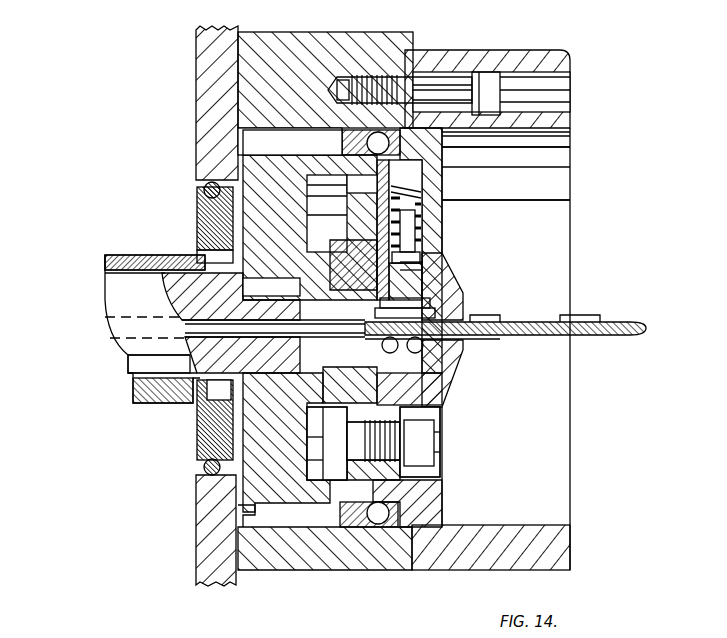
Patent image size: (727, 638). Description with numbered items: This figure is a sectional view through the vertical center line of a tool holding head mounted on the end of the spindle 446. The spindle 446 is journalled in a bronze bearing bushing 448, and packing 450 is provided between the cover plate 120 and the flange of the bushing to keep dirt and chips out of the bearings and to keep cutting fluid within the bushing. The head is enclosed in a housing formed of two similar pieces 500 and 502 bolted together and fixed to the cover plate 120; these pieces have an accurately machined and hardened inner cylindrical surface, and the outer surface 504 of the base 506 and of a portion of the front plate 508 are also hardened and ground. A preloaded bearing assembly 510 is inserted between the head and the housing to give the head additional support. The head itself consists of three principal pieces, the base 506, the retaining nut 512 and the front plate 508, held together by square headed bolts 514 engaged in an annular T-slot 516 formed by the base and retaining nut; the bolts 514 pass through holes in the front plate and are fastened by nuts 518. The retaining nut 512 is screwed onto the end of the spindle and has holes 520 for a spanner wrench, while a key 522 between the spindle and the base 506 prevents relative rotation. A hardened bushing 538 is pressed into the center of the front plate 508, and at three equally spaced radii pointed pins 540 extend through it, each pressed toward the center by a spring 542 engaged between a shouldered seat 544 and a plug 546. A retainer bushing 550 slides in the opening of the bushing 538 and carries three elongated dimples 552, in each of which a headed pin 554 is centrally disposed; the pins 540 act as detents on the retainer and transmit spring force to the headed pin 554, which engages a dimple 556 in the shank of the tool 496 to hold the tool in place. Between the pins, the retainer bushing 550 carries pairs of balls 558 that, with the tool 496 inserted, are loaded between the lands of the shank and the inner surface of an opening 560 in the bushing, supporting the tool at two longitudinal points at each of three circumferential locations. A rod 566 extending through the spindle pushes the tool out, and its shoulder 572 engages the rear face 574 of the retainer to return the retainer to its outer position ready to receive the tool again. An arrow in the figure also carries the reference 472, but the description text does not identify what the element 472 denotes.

The cover plate 120 is at (215, 100).
The spindle 446 is at (132, 300).
The bearing bushing 448 is at (200, 422).
The packing 450 is at (200, 470).
The feed direction arrow 472 is at (455, 492).
The tool 496 is at (572, 316).
The housing piece 500 is at (318, 55).
The housing piece 502 is at (455, 50).
The outer surface 504 is at (275, 505).
The base 506 is at (200, 528).
The front plate 508 is at (425, 512).
The bearing assembly 510 is at (355, 77).
The retaining nut 512 is at (352, 230).
The square headed bolt 514 is at (432, 448).
The annular T-slot 516 is at (318, 170).
The nut 518 is at (440, 468).
The spanner hole 520 is at (345, 262).
The key 522 is at (207, 262).
The hardened bushing 538 is at (445, 385).
The pin 540 is at (430, 285).
The spring 542 is at (442, 195).
The shouldered seat 544 is at (420, 252).
The plug 546 is at (442, 160).
The retainer bushing 550 is at (400, 315).
The elongated dimple 552 is at (418, 263).
The headed pin 554 is at (400, 300).
The dimple 556 is at (465, 340).
The ball 558 is at (462, 350).
The opening 560 is at (455, 360).
The rod 566 is at (193, 318).
The shoulder 572 is at (299, 288).
The rear face 574 is at (262, 360).